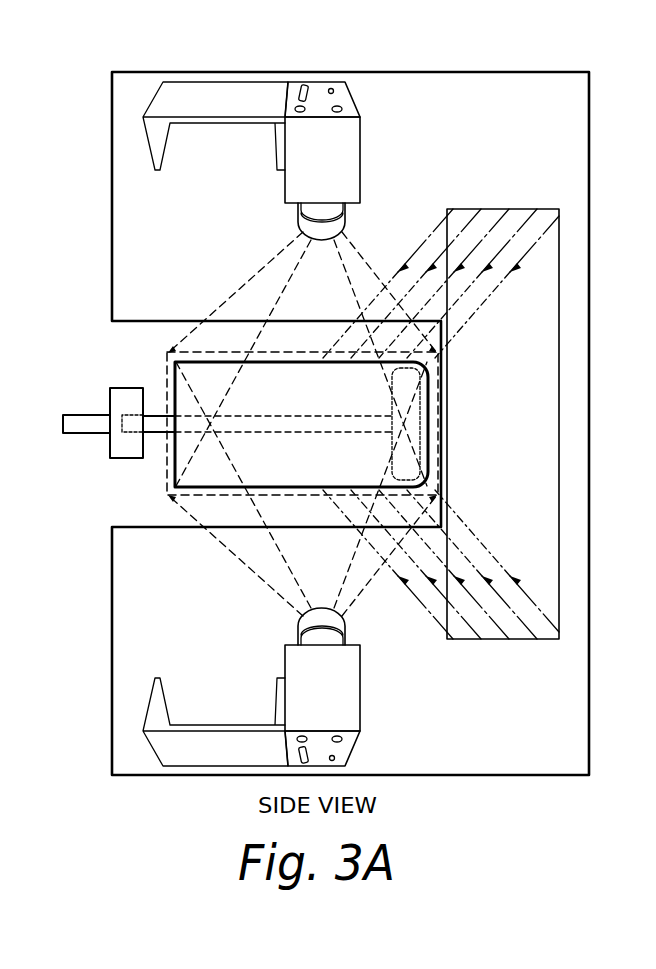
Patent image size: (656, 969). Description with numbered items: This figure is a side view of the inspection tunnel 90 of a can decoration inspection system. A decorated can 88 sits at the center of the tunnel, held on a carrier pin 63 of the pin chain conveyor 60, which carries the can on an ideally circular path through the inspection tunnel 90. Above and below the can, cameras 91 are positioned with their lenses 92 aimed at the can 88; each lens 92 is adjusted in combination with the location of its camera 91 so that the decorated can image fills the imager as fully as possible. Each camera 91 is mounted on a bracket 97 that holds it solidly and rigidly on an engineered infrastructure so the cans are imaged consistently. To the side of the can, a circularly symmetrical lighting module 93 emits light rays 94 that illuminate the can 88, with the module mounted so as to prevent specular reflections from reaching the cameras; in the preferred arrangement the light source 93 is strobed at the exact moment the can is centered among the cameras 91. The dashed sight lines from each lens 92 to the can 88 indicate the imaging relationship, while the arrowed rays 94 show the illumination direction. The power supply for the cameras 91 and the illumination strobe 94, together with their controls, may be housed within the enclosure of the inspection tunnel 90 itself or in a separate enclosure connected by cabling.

The inspection tunnel 90 is at (515, 72).
The camera 91 is at (360, 131).
The lens 92 is at (343, 222).
The lighting module 93 is at (517, 326).
The light rays 94 is at (531, 605).
The can 88 is at (210, 357).
The carrier pin 63 is at (279, 425).
The pin chain conveyor 60 is at (127, 399).
The bracket 97 is at (216, 753).